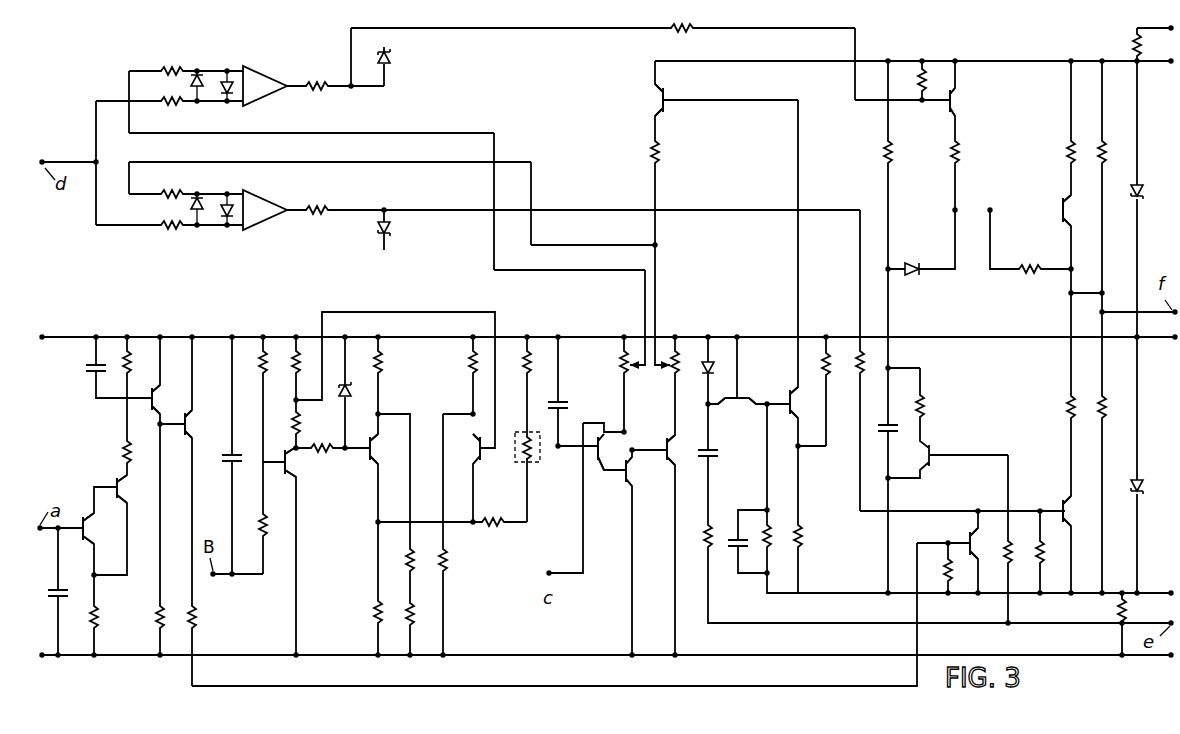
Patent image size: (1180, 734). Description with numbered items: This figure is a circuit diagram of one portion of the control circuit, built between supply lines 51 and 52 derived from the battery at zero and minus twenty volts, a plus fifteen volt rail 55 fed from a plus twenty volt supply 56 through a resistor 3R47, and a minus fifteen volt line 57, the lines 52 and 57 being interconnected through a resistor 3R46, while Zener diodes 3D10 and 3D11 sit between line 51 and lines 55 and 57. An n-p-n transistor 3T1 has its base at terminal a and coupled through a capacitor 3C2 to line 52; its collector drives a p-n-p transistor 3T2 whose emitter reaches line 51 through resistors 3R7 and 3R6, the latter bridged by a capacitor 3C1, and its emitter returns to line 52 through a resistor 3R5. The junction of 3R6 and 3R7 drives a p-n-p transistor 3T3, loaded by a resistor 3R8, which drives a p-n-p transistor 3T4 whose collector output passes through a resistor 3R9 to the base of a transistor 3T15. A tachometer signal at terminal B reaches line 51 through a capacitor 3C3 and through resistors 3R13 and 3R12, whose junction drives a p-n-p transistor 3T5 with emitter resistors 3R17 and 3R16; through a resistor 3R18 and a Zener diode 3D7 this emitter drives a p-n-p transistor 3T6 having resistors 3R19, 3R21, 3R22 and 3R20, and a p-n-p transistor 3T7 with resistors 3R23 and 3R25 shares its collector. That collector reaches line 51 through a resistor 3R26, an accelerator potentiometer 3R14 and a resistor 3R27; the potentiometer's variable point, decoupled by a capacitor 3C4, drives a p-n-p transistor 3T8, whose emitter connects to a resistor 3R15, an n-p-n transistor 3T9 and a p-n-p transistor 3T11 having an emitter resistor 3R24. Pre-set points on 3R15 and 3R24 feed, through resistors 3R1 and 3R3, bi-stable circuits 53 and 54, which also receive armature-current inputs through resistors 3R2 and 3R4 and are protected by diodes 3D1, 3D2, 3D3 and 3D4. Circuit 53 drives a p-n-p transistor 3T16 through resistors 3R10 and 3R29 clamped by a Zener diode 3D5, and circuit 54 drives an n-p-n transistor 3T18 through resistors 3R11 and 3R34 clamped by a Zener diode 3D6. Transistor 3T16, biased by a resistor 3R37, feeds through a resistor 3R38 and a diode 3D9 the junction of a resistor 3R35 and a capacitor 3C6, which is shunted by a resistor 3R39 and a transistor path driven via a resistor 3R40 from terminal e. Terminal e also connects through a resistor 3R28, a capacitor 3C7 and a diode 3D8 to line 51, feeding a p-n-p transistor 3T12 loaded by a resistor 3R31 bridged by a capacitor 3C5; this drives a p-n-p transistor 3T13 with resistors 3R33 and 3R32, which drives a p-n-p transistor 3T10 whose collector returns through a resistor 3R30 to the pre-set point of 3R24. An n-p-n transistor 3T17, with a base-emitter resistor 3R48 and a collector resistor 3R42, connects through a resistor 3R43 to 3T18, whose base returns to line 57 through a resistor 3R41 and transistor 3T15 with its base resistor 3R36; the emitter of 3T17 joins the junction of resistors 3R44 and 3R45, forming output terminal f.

The resistor 3R1 is at (173, 61).
The resistor 3R2 is at (173, 111).
The resistor 3R3 is at (170, 185).
The resistor 3R4 is at (168, 236).
The resistor 3R5 is at (110, 617).
The resistor 3R6 is at (143, 364).
The resistor 3R7 is at (109, 452).
The resistor 3R8 is at (142, 609).
The resistor 3R9 is at (208, 617).
The resistor 3R10 is at (321, 96).
The resistor 3R11 is at (321, 200).
The resistor 3R12 is at (262, 350).
The resistor 3R13 is at (272, 528).
The accelerator potentiometer 3R14 is at (511, 458).
The resistor 3R15 is at (603, 362).
The resistor 3R16 is at (297, 352).
The resistor 3R17 is at (285, 423).
The resistor 3R18 is at (332, 459).
The resistor 3R19 is at (400, 364).
The resistor 3R20 is at (360, 613).
The resistor 3R21 is at (415, 554).
The resistor 3R22 is at (415, 620).
The resistor 3R23 is at (466, 564).
The resistor 3R24 is at (678, 356).
The resistor 3R25 is at (451, 373).
The resistor 3R26 is at (503, 512).
The resistor 3R27 is at (530, 348).
The resistor 3R28 is at (699, 531).
The resistor 3R29 is at (686, 40).
The resistor 3R30 is at (679, 152).
The resistor 3R31 is at (772, 531).
The resistor 3R32 is at (803, 540).
The resistor 3R33 is at (828, 352).
The resistor 3R34 is at (864, 354).
The resistor 3R35 is at (910, 152).
The resistor 3R36 is at (945, 566).
The resistor 3R37 is at (925, 66).
The resistor 3R38 is at (977, 152).
The resistor 3R39 is at (944, 406).
The resistor 3R40 is at (1005, 562).
The resistor 3R41 is at (1046, 566).
The resistor 3R42 is at (1050, 149).
The resistor 3R43 is at (1050, 399).
The resistor 3R44 is at (1122, 141).
The resistor 3R45 is at (1100, 410).
The resistor 3R46 is at (1146, 610).
The resistor 3R47 is at (1156, 45).
The resistor 3R48 is at (1029, 260).
The diode 3D1 is at (203, 68).
The diode 3D2 is at (229, 100).
The diode 3D3 is at (208, 196).
The diode 3D4 is at (227, 230).
The Zener diode 3D5 is at (403, 62).
The Zener diode 3D6 is at (404, 230).
The Zener diode 3D7 is at (329, 404).
The diode 3D8 is at (712, 358).
The diode 3D9 is at (919, 258).
The Zener diode 3D10 is at (1155, 183).
The Zener diode 3D11 is at (1155, 473).
The n-p-n transistor 3T1 is at (104, 528).
The p-n-p transistor 3T2 is at (137, 489).
The p-n-p transistor 3T3 is at (166, 395).
The p-n-p transistor 3T4 is at (206, 424).
The p-n-p transistor 3T5 is at (292, 470).
The p-n-p transistor 3T6 is at (390, 449).
The p-n-p transistor 3T7 is at (463, 449).
The p-n-p transistor 3T8 is at (615, 452).
The n-p-n transistor 3T9 is at (646, 472).
The p-n-p transistor 3T10 is at (641, 100).
The p-n-p transistor 3T11 is at (685, 452).
The p-n-p transistor 3T12 is at (739, 413).
The p-n-p transistor 3T13 is at (782, 392).
The n-p-n transistor 3T15 is at (980, 530).
The p-n-p transistor 3T16 is at (976, 102).
The n-p-n transistor 3T17 is at (1088, 210).
The n-p-n transistor 3T18 is at (1049, 504).
The capacitor 3C1 is at (78, 367).
The capacitor 3C2 is at (71, 583).
The capacitor 3C3 is at (220, 468).
The capacitor 3C4 is at (574, 394).
The capacitor 3C5 is at (730, 533).
The capacitor 3C6 is at (880, 416).
The capacitor 3C7 is at (725, 454).
The supply line 51 is at (180, 337).
The supply line 52 is at (127, 657).
The bi-stable circuit 53 is at (262, 70).
The bi-stable circuit 54 is at (272, 222).
The plus 15 volt supply rail 55 is at (993, 61).
The plus 20 volt supply 56 is at (1108, 30).
The minus 15 volt supply line 57 is at (1170, 591).